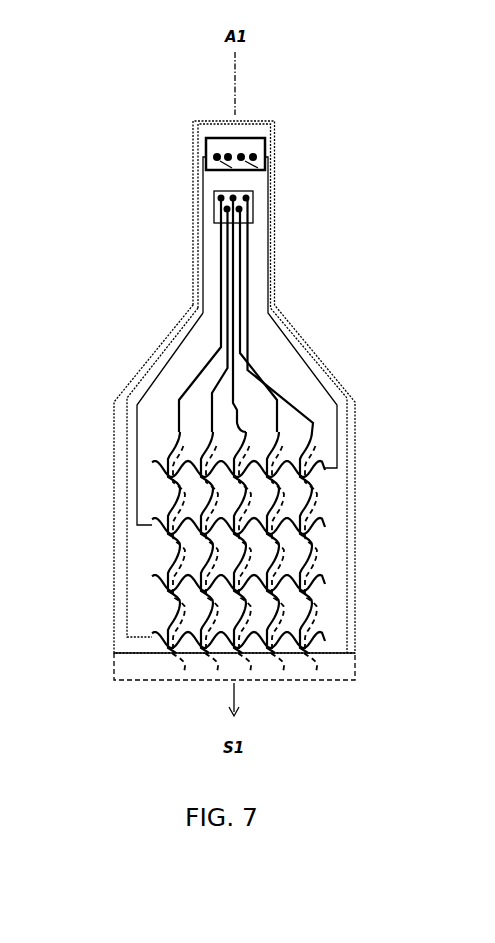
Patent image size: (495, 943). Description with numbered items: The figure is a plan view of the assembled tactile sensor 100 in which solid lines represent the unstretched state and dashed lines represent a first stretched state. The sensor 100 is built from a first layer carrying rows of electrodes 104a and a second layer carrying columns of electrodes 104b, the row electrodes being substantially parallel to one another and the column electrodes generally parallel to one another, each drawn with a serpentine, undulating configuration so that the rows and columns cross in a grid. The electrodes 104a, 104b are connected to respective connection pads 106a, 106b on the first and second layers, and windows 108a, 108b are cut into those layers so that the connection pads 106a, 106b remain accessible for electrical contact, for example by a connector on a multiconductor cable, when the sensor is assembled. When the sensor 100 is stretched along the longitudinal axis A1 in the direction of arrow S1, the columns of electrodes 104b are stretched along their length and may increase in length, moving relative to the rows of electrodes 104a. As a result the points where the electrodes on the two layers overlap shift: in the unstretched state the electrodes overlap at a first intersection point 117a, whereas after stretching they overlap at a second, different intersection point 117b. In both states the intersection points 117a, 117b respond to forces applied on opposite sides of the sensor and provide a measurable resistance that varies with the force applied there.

The tactile sensor 100 is at (171, 90).
The rows of electrodes 104a is at (152, 527).
The columns of electrodes 104b is at (318, 436).
The connection pad 106a is at (219, 198).
The connection pad 106b is at (283, 240).
The window 108a is at (248, 243).
The window 108b is at (287, 177).
The first intersection point 117a is at (313, 527).
The second intersection point 117b is at (313, 538).